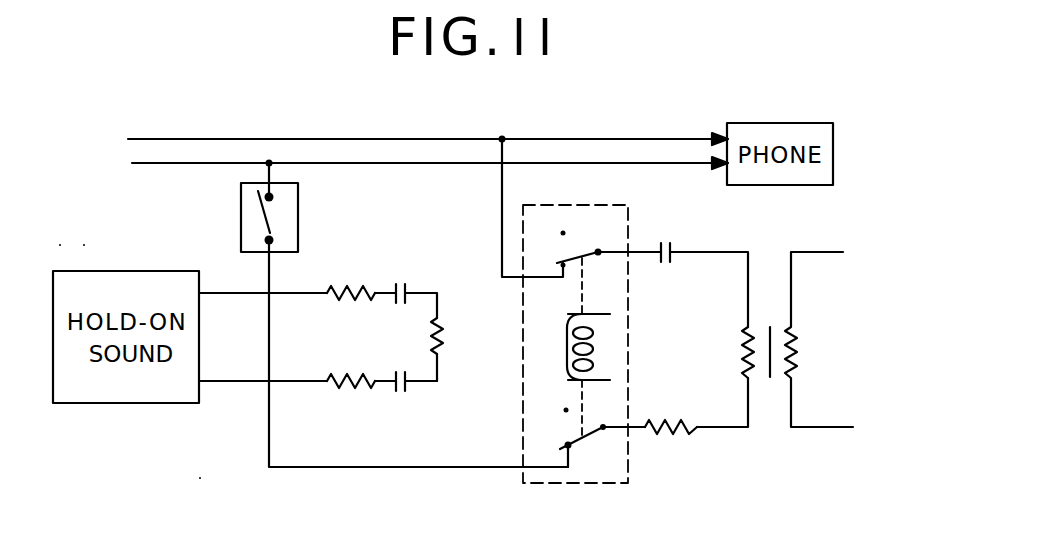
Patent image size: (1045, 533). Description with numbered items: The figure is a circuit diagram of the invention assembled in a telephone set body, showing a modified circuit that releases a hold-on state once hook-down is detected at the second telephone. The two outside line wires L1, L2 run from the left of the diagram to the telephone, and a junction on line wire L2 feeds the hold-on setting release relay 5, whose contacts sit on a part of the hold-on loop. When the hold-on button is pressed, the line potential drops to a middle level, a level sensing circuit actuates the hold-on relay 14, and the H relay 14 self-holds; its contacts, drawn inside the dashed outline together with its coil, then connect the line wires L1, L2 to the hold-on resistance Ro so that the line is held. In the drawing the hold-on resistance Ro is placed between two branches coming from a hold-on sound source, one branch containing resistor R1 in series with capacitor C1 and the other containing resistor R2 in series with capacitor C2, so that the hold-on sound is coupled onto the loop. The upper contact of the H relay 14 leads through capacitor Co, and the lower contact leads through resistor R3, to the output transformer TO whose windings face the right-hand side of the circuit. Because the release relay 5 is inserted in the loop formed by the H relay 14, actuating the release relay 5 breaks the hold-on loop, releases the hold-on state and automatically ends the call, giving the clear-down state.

The hold-on setting release relay 5 is at (250, 223).
The hold-on relay (H relay) 14 is at (628, 326).
The outside line wire L1 is at (403, 139).
The outside line wire L2 is at (403, 163).
The resistor R1 is at (351, 276).
The capacitor C1 is at (398, 277).
The resistor R2 is at (351, 361).
The capacitor C2 is at (398, 362).
The hold-on resistance Ro is at (454, 336).
The capacitor Co is at (674, 240).
The resistor R3 is at (671, 407).
The output transformer TO is at (797, 339).